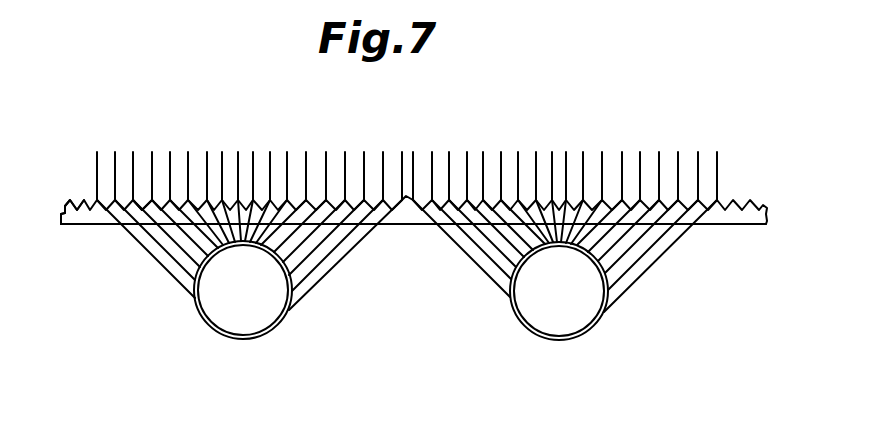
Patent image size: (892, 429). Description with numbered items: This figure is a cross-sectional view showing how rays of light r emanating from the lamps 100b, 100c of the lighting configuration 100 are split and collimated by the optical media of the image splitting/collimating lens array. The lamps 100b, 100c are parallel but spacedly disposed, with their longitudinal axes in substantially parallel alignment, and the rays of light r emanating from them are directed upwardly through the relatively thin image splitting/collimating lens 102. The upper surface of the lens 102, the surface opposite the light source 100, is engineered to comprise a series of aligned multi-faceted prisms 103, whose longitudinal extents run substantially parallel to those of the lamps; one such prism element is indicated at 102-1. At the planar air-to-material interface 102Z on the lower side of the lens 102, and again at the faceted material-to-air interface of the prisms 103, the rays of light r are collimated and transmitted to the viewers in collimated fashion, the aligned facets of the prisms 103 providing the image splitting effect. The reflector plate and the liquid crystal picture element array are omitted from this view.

The lighting configuration 100 is at (633, 333).
The lamp 100b is at (245, 339).
The lamp 100c is at (552, 340).
The image splitting/collimating lens 102 is at (758, 204).
The prism element of lens sheet 102-1 is at (143, 196).
The planar air-to-material interface 102Z is at (84, 225).
The multi-faceted prisms 103 is at (82, 200).
The rays of light r is at (162, 272).